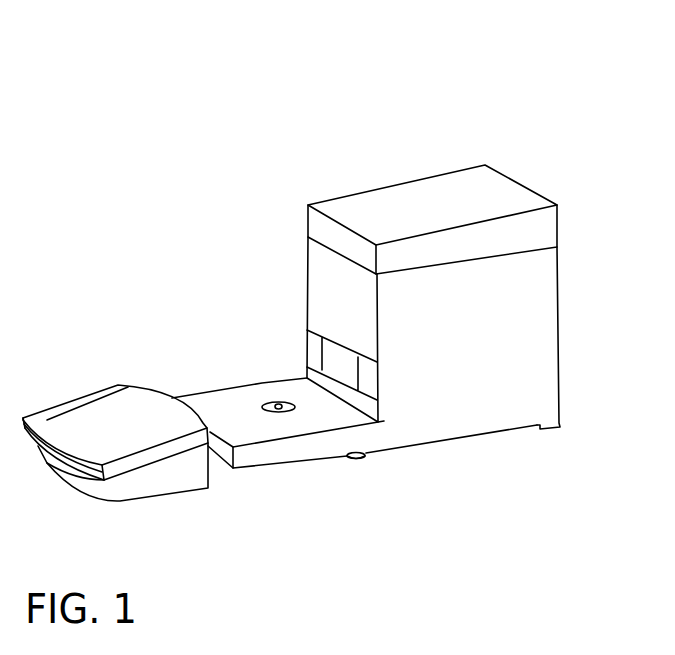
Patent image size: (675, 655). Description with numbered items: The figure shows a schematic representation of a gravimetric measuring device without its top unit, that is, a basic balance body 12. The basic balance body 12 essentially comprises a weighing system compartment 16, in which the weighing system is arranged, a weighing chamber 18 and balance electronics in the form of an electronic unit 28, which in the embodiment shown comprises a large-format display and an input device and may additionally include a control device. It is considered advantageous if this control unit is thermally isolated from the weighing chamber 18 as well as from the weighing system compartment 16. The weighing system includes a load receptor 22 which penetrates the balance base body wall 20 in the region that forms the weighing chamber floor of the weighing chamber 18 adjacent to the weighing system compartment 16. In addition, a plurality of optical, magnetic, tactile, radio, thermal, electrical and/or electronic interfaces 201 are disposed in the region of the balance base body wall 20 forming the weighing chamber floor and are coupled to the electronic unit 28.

The basic balance body 12 is at (492, 113).
The weighing system compartment 16 is at (508, 202).
The weighing chamber 18 is at (237, 268).
The balance base body wall 20 is at (355, 440).
The load receptor 22 is at (285, 413).
The interfaces 201 is at (276, 411).
The electronic unit 28 is at (100, 408).